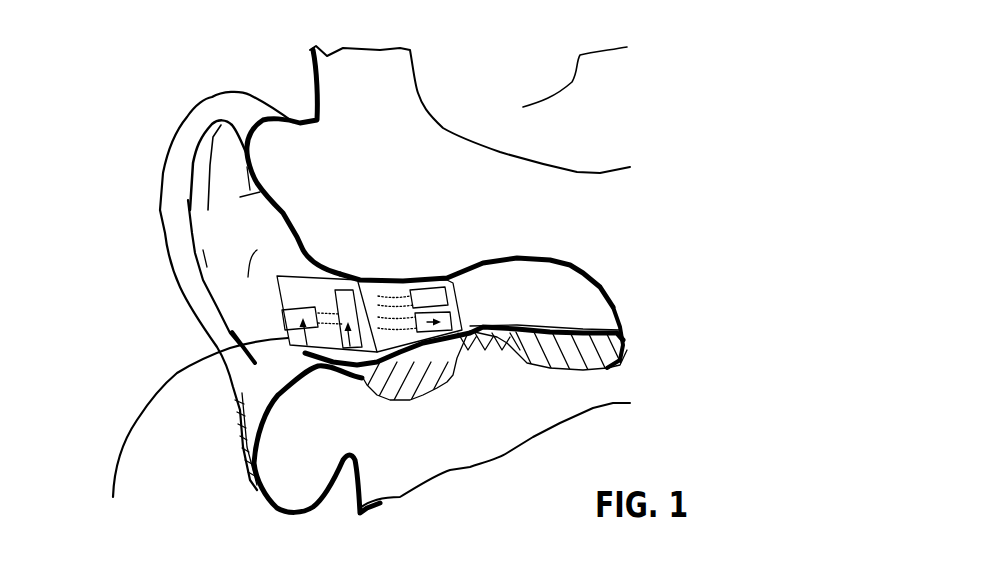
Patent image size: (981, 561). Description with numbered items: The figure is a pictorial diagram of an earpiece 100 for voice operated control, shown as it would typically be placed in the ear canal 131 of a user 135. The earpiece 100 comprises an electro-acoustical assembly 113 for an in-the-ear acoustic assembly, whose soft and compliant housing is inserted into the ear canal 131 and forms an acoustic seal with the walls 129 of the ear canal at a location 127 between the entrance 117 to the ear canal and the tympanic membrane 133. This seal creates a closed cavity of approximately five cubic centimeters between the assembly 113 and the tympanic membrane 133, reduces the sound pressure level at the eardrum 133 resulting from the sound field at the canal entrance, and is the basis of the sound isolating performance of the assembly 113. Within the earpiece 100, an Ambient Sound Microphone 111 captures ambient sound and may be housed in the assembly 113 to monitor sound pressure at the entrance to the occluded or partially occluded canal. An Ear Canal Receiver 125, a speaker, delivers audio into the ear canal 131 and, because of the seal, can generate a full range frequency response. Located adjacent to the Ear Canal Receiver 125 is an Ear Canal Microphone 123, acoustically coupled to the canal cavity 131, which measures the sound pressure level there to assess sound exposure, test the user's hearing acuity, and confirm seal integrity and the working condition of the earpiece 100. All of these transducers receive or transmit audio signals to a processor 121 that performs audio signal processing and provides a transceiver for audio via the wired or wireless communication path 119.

The earpiece 100 is at (662, 463).
The Ambient Sound Microphone (ASM) 111 is at (313, 360).
The electro-acoustical assembly 113 is at (279, 258).
The entrance to the ear canal 117 is at (151, 131).
The wired or wireless communication path 119 is at (126, 415).
The processor 121 is at (361, 362).
The Ear Canal Microphone (ECM) 123 is at (500, 367).
The Ear Canal Receiver (ECR) 125 is at (426, 290).
The location 127 is at (380, 261).
The walls of the ear canal 129 is at (473, 257).
The ear canal 131 is at (464, 322).
The tympanic membrane 133 is at (604, 269).
The user 135 is at (596, 60).